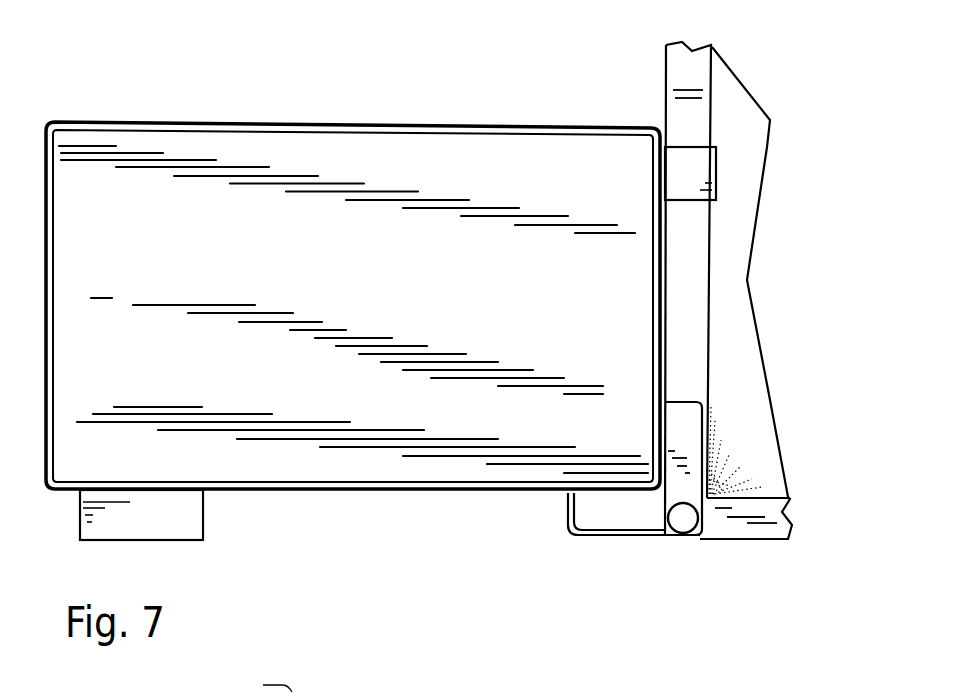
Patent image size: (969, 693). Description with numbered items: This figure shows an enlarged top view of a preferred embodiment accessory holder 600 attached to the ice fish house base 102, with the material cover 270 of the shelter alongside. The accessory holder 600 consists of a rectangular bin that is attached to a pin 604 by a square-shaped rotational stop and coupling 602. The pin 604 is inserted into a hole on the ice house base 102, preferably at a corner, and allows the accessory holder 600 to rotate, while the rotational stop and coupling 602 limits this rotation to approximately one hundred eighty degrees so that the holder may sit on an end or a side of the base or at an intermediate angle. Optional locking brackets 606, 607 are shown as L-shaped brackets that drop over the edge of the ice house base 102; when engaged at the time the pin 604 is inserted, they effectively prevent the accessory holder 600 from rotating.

The accessory holder 600 is at (207, 114).
The ice fish house base 102 is at (663, 97).
The locking bracket 606 is at (695, 158).
The material cover 270 is at (748, 122).
The rotational stop and coupling 602 is at (622, 537).
The pin 604 is at (686, 522).
The locking bracket 607 is at (187, 513).